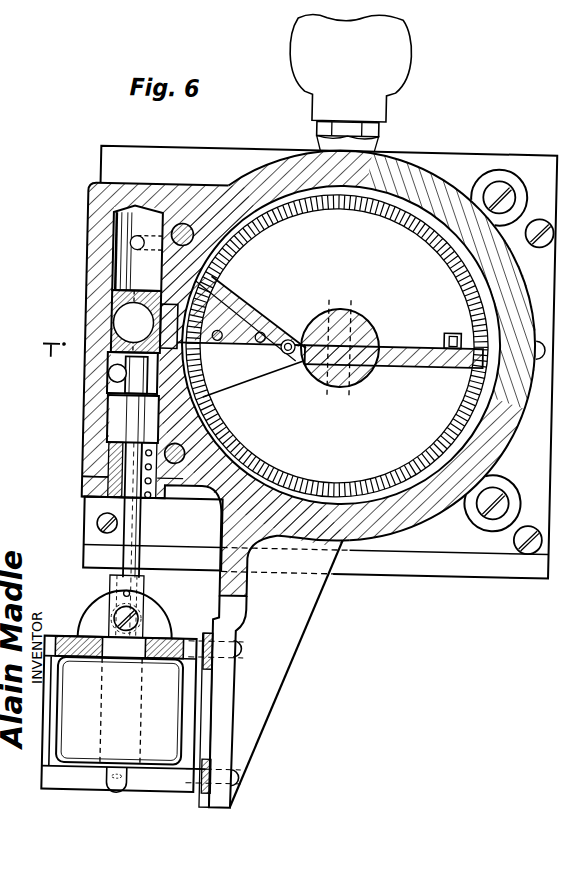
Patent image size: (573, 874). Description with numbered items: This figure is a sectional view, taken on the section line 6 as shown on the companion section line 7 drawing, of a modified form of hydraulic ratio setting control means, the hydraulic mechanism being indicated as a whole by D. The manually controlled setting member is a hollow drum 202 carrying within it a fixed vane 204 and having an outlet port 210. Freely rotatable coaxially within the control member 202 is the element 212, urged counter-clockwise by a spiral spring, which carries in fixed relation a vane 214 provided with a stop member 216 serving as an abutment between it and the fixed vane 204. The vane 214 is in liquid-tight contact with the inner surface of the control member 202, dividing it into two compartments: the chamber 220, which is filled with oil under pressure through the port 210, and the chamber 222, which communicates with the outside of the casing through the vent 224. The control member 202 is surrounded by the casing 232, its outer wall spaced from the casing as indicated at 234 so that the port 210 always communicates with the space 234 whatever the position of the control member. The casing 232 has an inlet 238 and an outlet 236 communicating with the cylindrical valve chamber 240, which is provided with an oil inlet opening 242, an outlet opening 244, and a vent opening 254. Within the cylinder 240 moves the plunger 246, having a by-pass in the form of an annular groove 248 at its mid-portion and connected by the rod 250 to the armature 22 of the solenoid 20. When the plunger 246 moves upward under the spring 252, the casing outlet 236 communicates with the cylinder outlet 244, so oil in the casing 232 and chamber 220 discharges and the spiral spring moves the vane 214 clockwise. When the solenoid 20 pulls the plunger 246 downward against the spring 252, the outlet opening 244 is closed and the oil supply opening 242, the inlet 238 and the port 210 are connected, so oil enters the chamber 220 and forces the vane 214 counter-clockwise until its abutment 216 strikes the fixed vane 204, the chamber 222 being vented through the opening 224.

The hydraulic mechanism D is at (410, 150).
The hollow drum 202 is at (293, 210).
The fixed vane 204 is at (231, 300).
The outlet port 210 is at (190, 356).
The element 212 is at (340, 320).
The vane 214 is at (387, 360).
The stop member 216 is at (450, 329).
The chamber 220 is at (337, 346).
The chamber 222 is at (341, 345).
The vent 224 is at (290, 344).
The casing 232 is at (441, 193).
The space 234 is at (389, 503).
The outlet 236 is at (153, 347).
The inlet 238 is at (110, 420).
The cylindrical valve chamber 240 is at (110, 221).
The oil inlet opening 242 is at (110, 380).
The outlet opening 244 is at (110, 302).
The plunger 246 is at (112, 452).
The annular groove 248 is at (157, 384).
The rod 250 is at (126, 543).
The spring 252 is at (95, 497).
The vent opening 254 is at (131, 248).
The armature 22 is at (102, 618).
The solenoid 20 is at (124, 715).
The section line 6 is at (118, 463).
The section line 7 is at (53, 361).